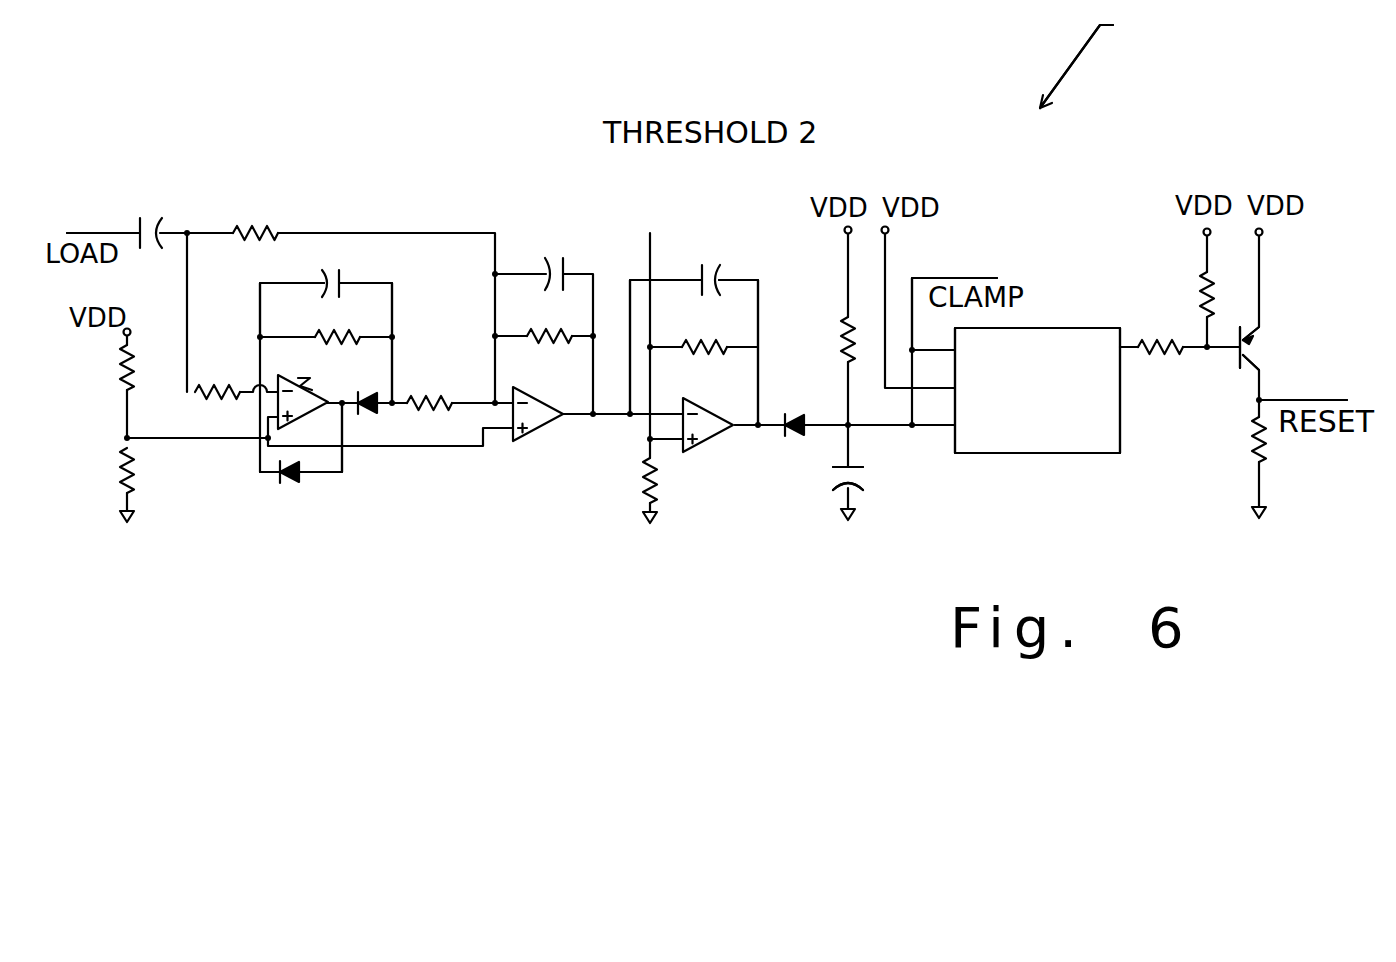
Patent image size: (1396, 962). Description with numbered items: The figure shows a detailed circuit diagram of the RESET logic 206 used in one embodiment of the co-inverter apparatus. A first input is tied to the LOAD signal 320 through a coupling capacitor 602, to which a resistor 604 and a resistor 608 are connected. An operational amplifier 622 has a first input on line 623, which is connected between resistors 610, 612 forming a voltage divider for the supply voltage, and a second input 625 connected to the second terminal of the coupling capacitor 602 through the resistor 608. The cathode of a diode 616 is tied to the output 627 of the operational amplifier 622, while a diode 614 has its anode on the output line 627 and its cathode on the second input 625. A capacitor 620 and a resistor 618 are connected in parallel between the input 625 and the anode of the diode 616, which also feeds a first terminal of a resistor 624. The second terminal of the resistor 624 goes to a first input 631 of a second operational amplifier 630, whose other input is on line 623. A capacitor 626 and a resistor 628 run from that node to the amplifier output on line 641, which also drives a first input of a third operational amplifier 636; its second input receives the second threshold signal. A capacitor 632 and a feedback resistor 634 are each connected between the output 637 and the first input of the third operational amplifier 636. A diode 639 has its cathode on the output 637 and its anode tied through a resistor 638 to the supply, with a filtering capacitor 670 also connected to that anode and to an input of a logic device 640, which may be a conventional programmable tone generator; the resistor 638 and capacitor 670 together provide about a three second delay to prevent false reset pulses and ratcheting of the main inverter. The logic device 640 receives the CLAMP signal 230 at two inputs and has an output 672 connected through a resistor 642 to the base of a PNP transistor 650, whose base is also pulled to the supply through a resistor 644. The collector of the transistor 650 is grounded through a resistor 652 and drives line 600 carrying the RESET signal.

The RESET logic 206 is at (1111, 59).
The CLAMP signal 230 is at (915, 276).
The LOAD signal 320 is at (92, 233).
The RESET signal line 600 is at (1335, 400).
The coupling capacitor 602 is at (160, 228).
The resistor 604 is at (258, 228).
The resistor 608 is at (220, 398).
The resistor 610 is at (135, 366).
The resistor 612 is at (140, 455).
The diode 614 is at (284, 480).
The diode 616 is at (368, 393).
The resistor 618 is at (390, 328).
The capacitor 620 is at (377, 235).
The operational amplifier 622 is at (318, 386).
The line 623 is at (230, 440).
The resistor 624 is at (442, 407).
The second input 625 is at (268, 392).
The capacitor 626 is at (577, 268).
The output line 627 is at (348, 410).
The resistor 628 is at (568, 336).
The operational amplifier 630 is at (552, 432).
The first input 631 is at (694, 352).
The capacitor 632 is at (700, 278).
The feedback resistor 634 is at (728, 345).
The third operational amplifier 636 is at (708, 407).
The output 637 is at (740, 432).
The resistor 638 is at (840, 322).
The diode 639 is at (785, 432).
The logic device 640 is at (1060, 328).
The output line 641 is at (618, 418).
The resistor 642 is at (1185, 355).
The resistor 644 is at (1198, 315).
The transistor 650 is at (1250, 336).
The resistor 652 is at (1255, 445).
The filtering capacitor 670 is at (852, 462).
The output 672 is at (1128, 348).